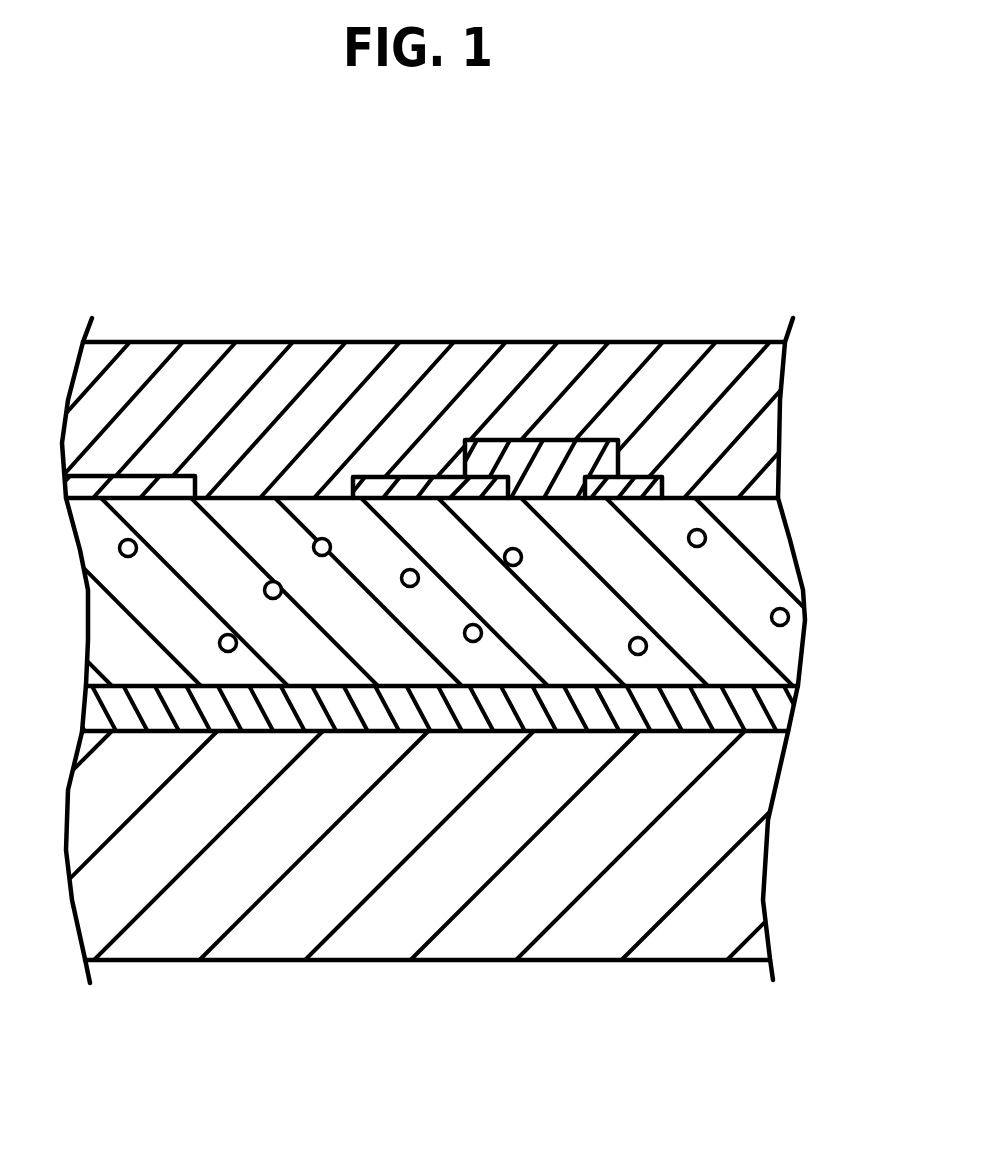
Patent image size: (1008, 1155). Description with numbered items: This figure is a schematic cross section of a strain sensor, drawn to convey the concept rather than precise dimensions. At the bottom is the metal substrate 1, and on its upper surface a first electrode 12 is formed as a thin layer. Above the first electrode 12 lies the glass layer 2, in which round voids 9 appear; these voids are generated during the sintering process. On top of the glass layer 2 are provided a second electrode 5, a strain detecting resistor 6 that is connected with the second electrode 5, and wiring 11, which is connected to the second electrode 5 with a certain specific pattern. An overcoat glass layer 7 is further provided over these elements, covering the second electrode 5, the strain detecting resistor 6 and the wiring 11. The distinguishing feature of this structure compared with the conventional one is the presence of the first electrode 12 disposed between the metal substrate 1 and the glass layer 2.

The metal substrate 1 is at (747, 857).
The glass layer 2 is at (762, 555).
The second electrode 5 is at (394, 482).
The strain detecting resistor 6 is at (533, 483).
The overcoat glass layer 7 is at (745, 408).
The round voids 9 is at (790, 619).
The wiring 11 is at (102, 490).
The first electrode 12 is at (790, 732).